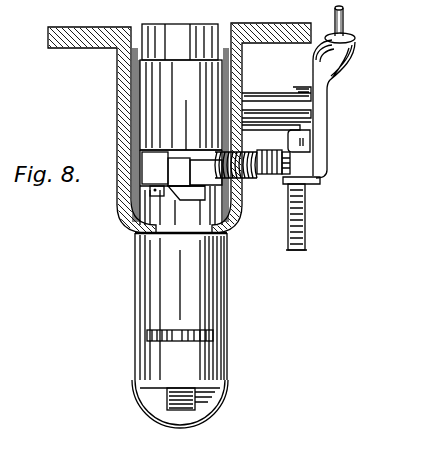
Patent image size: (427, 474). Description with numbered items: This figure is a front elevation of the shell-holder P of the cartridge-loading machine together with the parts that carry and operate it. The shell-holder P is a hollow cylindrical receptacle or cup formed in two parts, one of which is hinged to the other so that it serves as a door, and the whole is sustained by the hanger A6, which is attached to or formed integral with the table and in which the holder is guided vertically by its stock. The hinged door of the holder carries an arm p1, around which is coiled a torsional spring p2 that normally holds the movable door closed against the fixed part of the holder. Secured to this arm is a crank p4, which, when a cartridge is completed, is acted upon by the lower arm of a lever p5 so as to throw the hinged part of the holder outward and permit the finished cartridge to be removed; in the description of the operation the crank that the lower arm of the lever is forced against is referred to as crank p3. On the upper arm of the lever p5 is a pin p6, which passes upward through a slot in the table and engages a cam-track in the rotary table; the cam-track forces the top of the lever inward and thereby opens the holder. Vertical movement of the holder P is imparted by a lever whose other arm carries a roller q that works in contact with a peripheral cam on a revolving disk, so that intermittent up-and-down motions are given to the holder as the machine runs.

The shell-holder P is at (181, 124).
The arm p1 is at (262, 160).
The torsional spring p2 is at (240, 180).
The crank p3 is at (200, 200).
The crank p4 is at (320, 182).
The lever p5 is at (305, 235).
The pin p6 is at (344, 14).
The hanger A6 is at (167, 330).
The roller q is at (155, 400).